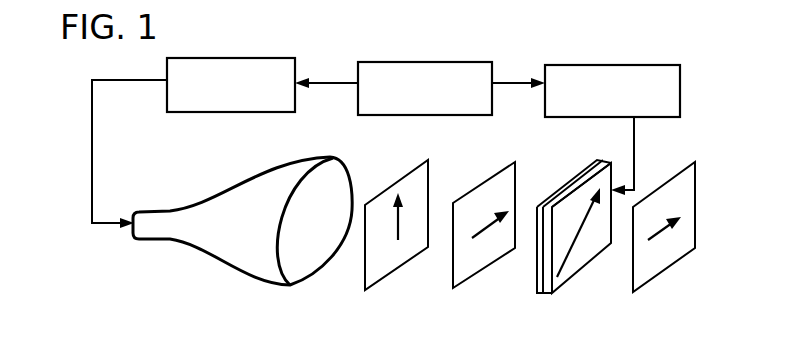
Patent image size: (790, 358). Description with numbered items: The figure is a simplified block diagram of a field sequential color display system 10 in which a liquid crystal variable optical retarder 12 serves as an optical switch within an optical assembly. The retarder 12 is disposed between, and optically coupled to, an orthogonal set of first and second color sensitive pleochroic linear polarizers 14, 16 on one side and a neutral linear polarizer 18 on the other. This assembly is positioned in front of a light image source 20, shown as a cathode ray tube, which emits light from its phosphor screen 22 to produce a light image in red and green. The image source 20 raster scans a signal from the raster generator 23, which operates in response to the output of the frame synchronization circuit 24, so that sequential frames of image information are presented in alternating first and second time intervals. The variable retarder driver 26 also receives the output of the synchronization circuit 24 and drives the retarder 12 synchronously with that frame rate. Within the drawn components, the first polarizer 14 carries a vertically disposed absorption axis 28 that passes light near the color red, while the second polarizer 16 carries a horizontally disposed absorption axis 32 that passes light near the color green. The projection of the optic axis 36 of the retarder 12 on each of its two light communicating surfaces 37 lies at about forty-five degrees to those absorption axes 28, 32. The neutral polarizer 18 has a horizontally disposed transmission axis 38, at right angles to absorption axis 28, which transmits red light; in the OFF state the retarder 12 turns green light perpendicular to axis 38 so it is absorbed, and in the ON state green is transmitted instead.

The field sequential color display system 10 is at (240, 244).
The liquid crystal variable optical retarder 12 is at (577, 223).
The first color sensitive pleochroic linear polarizer 14 is at (403, 238).
The second color sensitive pleochroic linear polarizer 16 is at (489, 239).
The neutral linear polarizer 18 is at (664, 238).
The light image source 20 is at (245, 259).
The phosphor screen 22 is at (295, 272).
The raster generator 23 is at (218, 112).
The frame synchronization circuit 24 is at (400, 115).
The variable retarder driver 26 is at (585, 117).
The absorption axis 28 is at (398, 228).
The absorption axis 32 is at (488, 228).
The optic axis 36 is at (588, 207).
The light communicating surfaces 37 is at (613, 171).
The transmission axis 38 is at (667, 227).